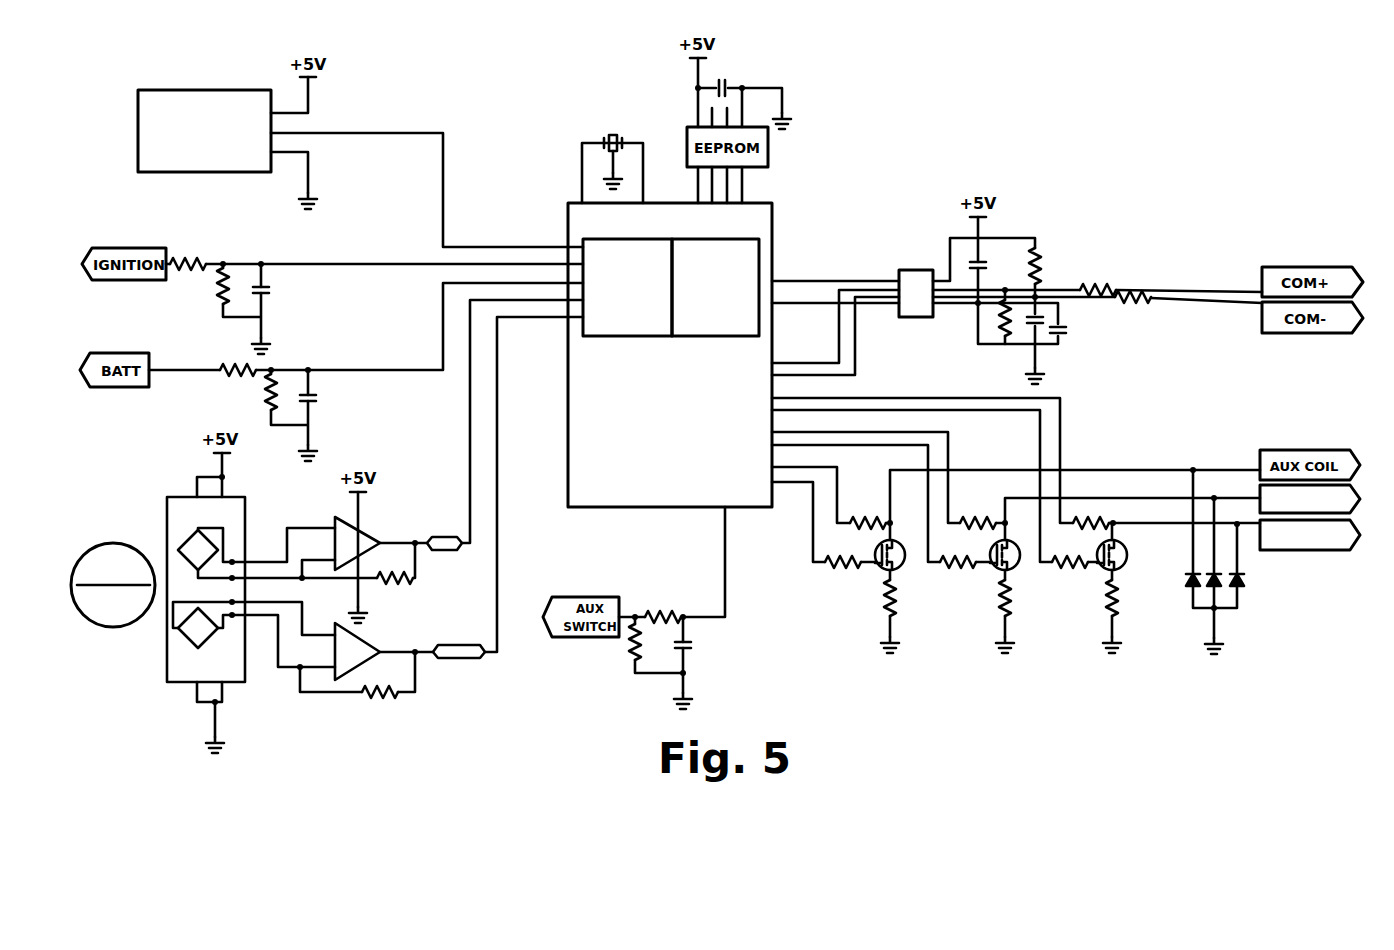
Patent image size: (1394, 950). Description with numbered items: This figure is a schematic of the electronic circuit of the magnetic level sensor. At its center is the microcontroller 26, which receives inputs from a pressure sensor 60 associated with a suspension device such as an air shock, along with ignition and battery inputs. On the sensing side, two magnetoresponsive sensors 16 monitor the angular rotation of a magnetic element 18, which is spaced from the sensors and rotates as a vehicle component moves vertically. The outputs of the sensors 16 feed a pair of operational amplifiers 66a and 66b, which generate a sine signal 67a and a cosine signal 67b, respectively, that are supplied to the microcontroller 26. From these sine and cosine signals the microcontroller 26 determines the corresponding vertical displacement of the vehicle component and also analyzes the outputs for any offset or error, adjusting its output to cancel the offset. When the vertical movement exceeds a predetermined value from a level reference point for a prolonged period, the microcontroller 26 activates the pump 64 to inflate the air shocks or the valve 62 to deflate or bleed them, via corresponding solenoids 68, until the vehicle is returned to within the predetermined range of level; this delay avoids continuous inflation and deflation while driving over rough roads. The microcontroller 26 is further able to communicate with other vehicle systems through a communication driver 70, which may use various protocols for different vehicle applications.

The pressure sensor 60 is at (207, 90).
The communication driver 70 is at (915, 270).
The microcontroller 26 is at (683, 507).
The magnetic element 18 is at (85, 553).
The magnetoresponsive sensors 16 is at (188, 543).
The operational amplifier 66a is at (345, 519).
The operational amplifier 66b is at (367, 641).
The sine signal 67a is at (444, 537).
The cosine signal 67b is at (465, 658).
The solenoids 68 is at (1040, 642).
The valve 62 is at (1318, 550).
The pump 64 is at (1356, 513).